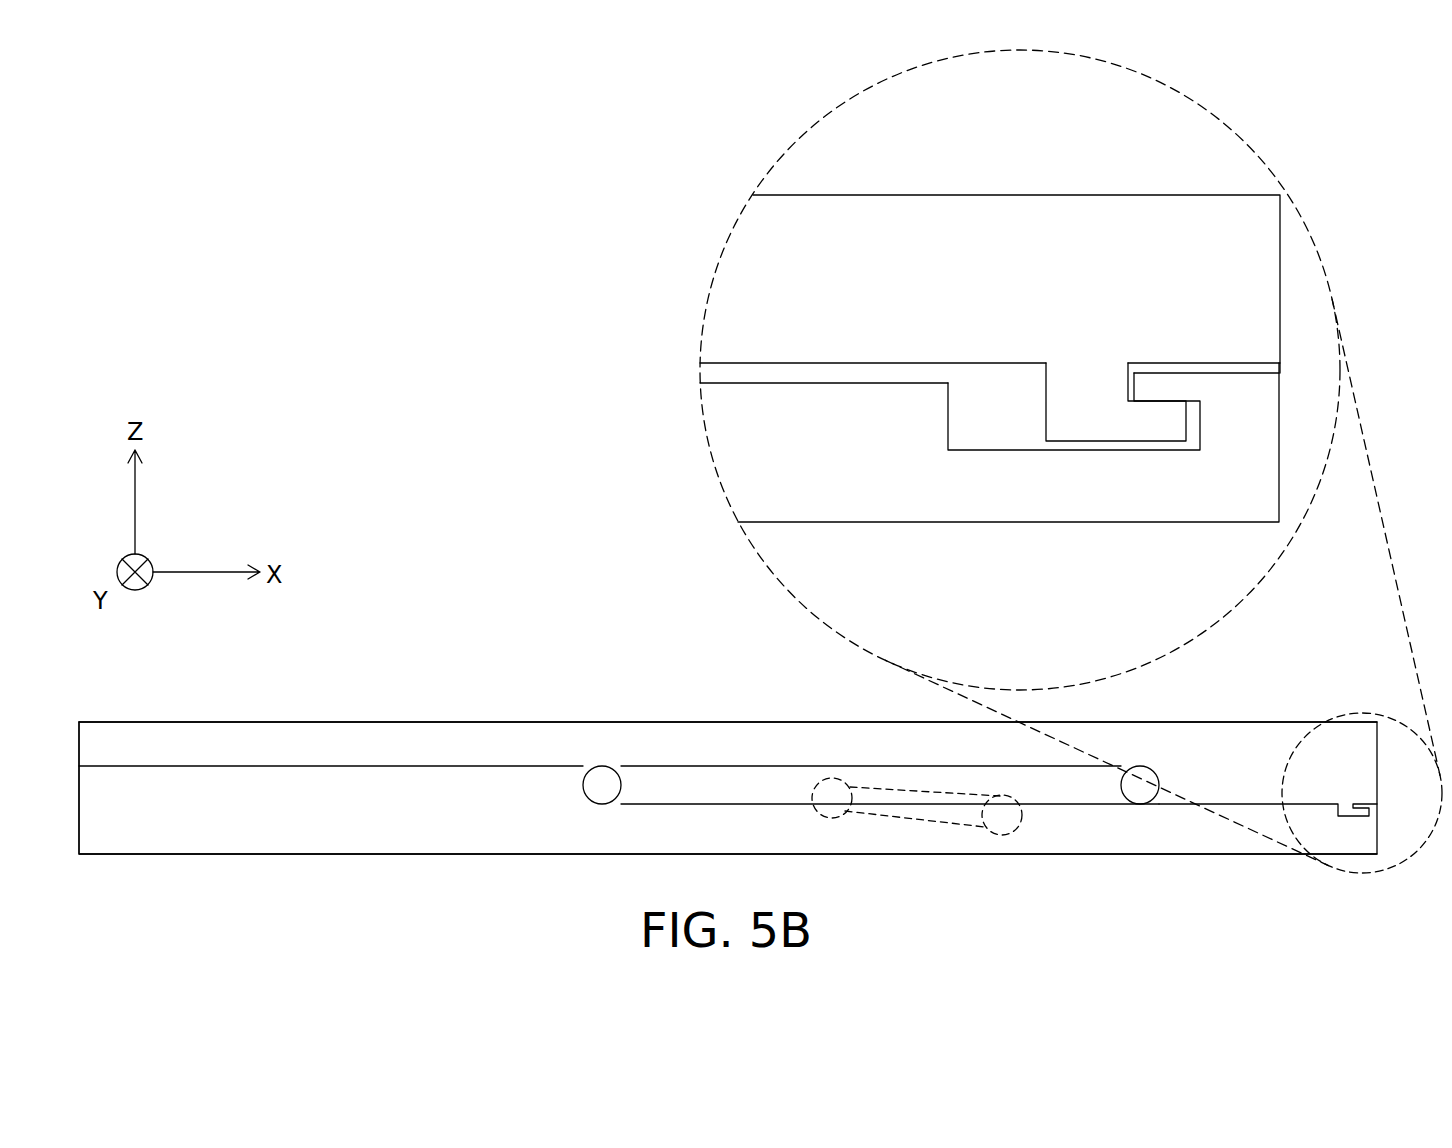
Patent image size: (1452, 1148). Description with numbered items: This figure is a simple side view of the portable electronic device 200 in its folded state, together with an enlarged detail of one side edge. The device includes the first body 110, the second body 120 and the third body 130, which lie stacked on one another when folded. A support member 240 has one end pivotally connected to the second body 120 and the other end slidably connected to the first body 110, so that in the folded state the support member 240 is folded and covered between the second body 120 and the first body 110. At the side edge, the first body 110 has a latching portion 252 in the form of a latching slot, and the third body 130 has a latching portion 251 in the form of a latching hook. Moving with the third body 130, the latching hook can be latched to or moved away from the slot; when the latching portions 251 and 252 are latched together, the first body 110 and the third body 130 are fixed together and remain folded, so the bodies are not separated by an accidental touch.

The portable electronic device 200 is at (1436, 910).
The first body 110 is at (337, 833).
The second body 120 is at (748, 786).
The third body 130 is at (334, 738).
The support member 240 is at (913, 818).
The latching portion 251 is at (1163, 418).
The latching portion 252 is at (1000, 410).